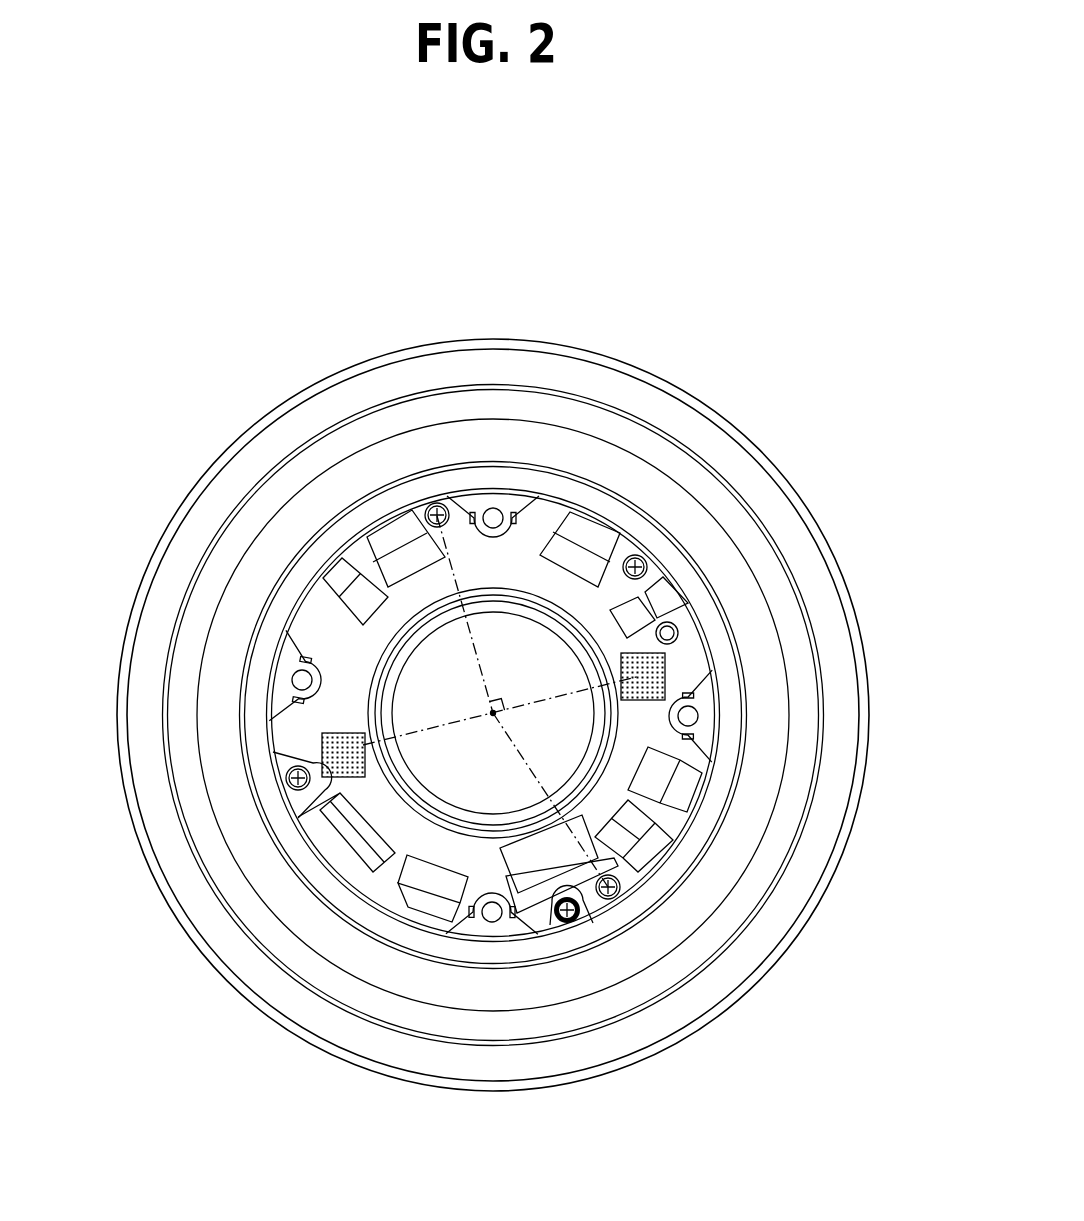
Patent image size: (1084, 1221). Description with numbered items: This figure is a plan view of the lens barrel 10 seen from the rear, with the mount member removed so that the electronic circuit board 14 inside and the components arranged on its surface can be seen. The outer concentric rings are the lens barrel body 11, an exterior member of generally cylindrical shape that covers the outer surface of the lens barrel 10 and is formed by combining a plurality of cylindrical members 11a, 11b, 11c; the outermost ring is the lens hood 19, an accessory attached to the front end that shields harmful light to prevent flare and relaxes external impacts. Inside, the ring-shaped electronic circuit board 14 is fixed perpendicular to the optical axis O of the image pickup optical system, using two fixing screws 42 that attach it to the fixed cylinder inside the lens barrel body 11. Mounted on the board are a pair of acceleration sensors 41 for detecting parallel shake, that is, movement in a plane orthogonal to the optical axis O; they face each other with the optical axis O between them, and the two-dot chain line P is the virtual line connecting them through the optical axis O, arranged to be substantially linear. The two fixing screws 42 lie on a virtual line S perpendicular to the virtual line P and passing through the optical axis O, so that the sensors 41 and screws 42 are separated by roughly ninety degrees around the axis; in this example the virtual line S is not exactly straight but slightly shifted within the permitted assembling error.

The lens barrel 10 is at (180, 315).
The lens barrel body 11 is at (742, 311).
The cylindrical member 11a is at (633, 417).
The cylindrical member 11b is at (577, 420).
The cylindrical member 11c is at (527, 440).
The electronic circuit board 14 is at (603, 605).
The lens hood 19 is at (730, 463).
The acceleration sensor 41 is at (665, 673).
The fixing screw 42 is at (437, 503).
The virtual line S is at (478, 665).
The virtual line P is at (553, 693).
The optical axis O is at (493, 718).